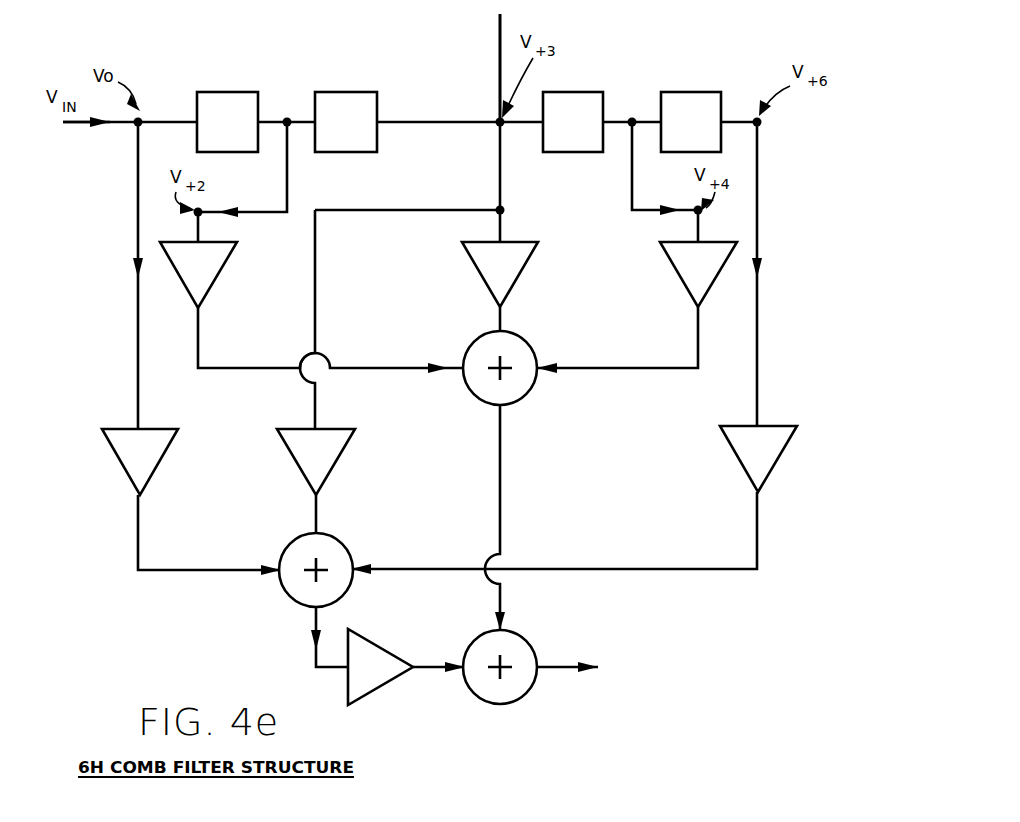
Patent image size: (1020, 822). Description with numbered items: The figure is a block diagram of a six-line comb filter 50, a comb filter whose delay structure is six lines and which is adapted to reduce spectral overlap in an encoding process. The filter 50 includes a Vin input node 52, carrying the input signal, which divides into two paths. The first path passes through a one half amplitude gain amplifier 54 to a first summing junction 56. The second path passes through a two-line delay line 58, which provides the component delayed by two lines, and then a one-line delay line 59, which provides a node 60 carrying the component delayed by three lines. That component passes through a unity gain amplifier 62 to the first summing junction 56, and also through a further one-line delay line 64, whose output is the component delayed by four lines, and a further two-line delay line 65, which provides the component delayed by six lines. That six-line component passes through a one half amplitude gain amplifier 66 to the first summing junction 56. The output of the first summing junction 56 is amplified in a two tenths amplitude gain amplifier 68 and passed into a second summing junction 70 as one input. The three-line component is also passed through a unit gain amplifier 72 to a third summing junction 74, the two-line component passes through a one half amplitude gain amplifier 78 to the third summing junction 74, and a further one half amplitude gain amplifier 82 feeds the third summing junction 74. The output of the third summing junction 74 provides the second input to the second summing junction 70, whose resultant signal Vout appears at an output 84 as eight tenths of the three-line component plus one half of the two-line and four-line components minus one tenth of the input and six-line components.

The 6H comb filter 50 is at (838, 311).
The Vin input node 52 is at (100, 125).
The one half amplitude gain amplifier 54 is at (128, 472).
The first summing junction 56 is at (294, 540).
The 2H delay line 58 is at (218, 100).
The 1H delay line 59 is at (330, 100).
The V3 node 60 is at (500, 64).
The unity gain amplifier 62 is at (298, 464).
The 1H delay line 64 is at (588, 100).
The 2H delay line 65 is at (690, 100).
The one half amplitude gain amplifier 66 is at (786, 436).
The two tenths amplitude gain amplifier 68 is at (390, 652).
The second summing junction 70 is at (522, 640).
The unit gain amplifier 72 is at (524, 256).
The third summing junction 74 is at (522, 338).
The one half amplitude gain amplifier 78 is at (206, 285).
The one half amplitude gain amplifier 82 is at (692, 280).
The output 84 is at (590, 630).